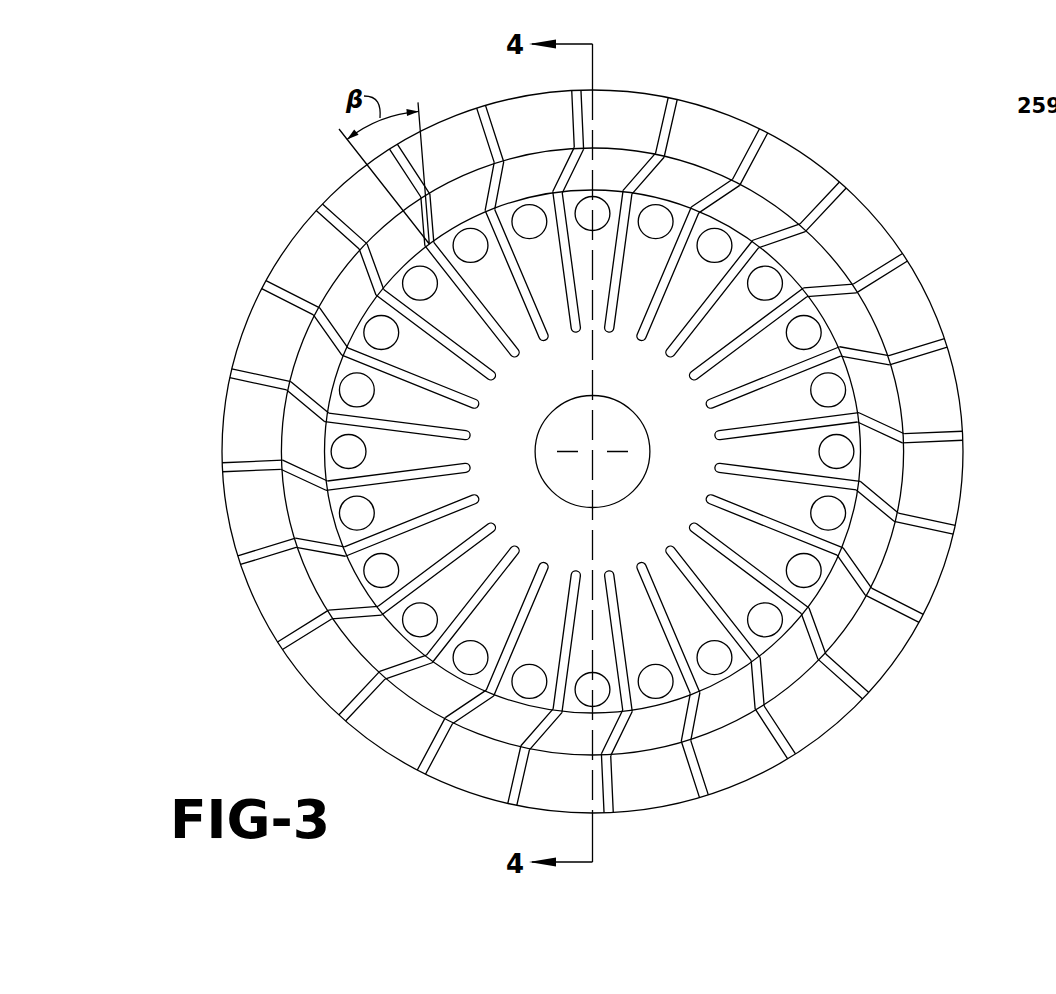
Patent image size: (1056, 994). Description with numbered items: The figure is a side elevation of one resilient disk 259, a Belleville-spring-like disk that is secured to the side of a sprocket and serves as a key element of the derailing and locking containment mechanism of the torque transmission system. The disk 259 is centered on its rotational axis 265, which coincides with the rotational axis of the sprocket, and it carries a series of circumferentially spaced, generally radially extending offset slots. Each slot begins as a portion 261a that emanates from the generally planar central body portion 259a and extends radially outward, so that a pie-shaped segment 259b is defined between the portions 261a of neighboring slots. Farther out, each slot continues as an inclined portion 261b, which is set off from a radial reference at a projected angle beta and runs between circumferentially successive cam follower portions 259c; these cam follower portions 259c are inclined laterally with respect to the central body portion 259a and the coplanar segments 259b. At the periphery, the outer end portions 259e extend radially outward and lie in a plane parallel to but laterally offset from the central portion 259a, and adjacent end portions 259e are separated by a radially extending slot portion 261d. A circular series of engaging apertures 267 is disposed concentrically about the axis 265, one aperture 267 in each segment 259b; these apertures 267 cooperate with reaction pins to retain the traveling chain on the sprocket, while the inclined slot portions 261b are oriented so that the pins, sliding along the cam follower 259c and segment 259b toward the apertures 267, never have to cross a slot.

The resilient disk 259 is at (920, 245).
The central body portion 259a is at (505, 449).
The pie-shaped segment 259b is at (460, 381).
The cam follower portion 259c is at (348, 294).
The end portion 259e is at (704, 116).
The slot portion 261a is at (662, 291).
The inclined slot portion 261b is at (331, 336).
The radially extending slot portion 261d is at (683, 94).
The rotational axis 265 is at (596, 450).
The engaging aperture 267 is at (836, 383).